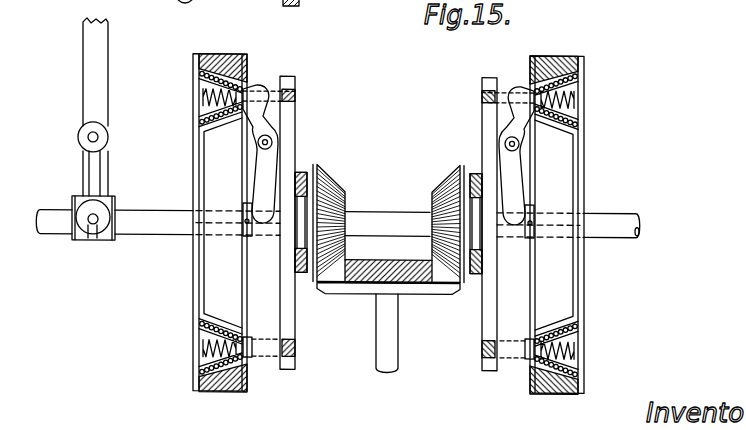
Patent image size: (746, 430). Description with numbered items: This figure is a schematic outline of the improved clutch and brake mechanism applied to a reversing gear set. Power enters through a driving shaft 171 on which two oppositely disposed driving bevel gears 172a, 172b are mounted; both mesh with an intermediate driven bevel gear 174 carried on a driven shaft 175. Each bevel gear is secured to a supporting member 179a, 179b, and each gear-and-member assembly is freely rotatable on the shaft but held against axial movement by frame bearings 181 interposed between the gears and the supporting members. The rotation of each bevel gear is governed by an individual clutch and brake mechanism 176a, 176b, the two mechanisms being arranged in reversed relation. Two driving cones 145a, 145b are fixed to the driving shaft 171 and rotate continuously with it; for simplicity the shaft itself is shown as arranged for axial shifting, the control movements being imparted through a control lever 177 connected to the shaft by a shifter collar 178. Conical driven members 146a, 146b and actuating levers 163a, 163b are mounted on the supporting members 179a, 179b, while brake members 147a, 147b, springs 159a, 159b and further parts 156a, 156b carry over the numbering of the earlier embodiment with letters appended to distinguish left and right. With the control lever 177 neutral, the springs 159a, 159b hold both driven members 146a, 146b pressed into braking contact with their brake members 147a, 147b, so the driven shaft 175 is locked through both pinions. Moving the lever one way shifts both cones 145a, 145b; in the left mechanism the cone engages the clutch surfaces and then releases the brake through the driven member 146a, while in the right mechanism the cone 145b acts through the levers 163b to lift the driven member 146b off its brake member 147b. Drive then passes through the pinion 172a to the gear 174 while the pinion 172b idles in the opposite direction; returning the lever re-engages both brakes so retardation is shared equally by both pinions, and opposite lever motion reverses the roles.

The driving cone 145a is at (222, 155).
The driving cone 145b is at (556, 152).
The conical driven member 146a is at (196, 116).
The conical driven member 146b is at (585, 120).
The brake member 147a is at (246, 62).
The brake member 147b is at (540, 62).
The cone member 156a is at (192, 361).
The cone member 156b is at (576, 368).
The spring 159a is at (196, 333).
The spring 159b is at (572, 333).
The actuating lever 163a is at (263, 176).
The actuating lever 163b is at (512, 188).
The driving shaft 171 is at (618, 216).
The driving bevel gear 172a is at (322, 170).
The driving bevel gear 172b is at (443, 178).
The intermediate driven bevel gear 174 is at (350, 300).
The driven shaft 175 is at (396, 362).
The clutch and brake mechanism 176a is at (183, 69).
The clutch and brake mechanism 176b is at (595, 92).
The control lever 177 is at (88, 88).
The shifter collar 178 is at (93, 245).
The supporting member 179a is at (296, 84).
The supporting member 179b is at (483, 84).
The frame bearing 181 is at (298, 175).